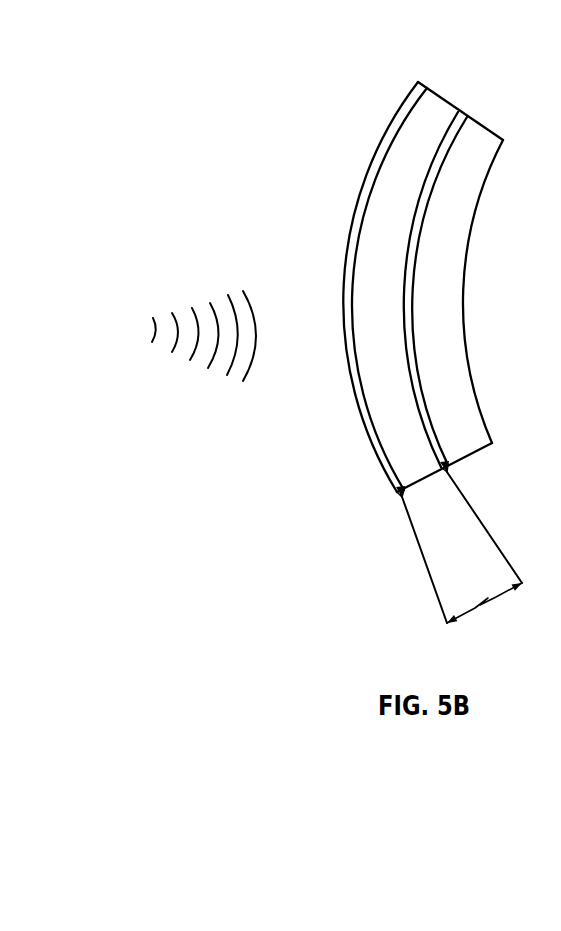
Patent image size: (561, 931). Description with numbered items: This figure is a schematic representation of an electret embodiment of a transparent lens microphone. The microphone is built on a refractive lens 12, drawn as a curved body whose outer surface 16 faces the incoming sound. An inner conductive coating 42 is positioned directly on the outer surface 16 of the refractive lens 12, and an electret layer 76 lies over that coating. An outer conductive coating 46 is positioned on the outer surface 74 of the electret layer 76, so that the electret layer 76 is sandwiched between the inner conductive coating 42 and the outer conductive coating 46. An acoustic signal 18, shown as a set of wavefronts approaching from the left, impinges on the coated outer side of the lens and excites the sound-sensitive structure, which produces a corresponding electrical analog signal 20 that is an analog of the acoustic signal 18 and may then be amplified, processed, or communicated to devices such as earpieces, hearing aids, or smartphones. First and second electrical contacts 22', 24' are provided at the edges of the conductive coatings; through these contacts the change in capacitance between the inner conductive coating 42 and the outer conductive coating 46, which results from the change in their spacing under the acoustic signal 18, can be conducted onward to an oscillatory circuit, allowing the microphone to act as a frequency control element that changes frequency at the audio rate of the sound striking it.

The refractive lens 12 is at (405, 304).
The outer surface 16 is at (417, 289).
The acoustic signal 18 is at (255, 357).
The electrical analog signal 20 is at (485, 605).
The first electrical contact 22' is at (480, 482).
The second electrical contact 24' is at (369, 506).
The inner conductive coating 42 is at (433, 422).
The outer conductive coating 46 is at (380, 447).
The outer surface of electret layer 74 is at (352, 287).
The electret layer 76 is at (378, 220).